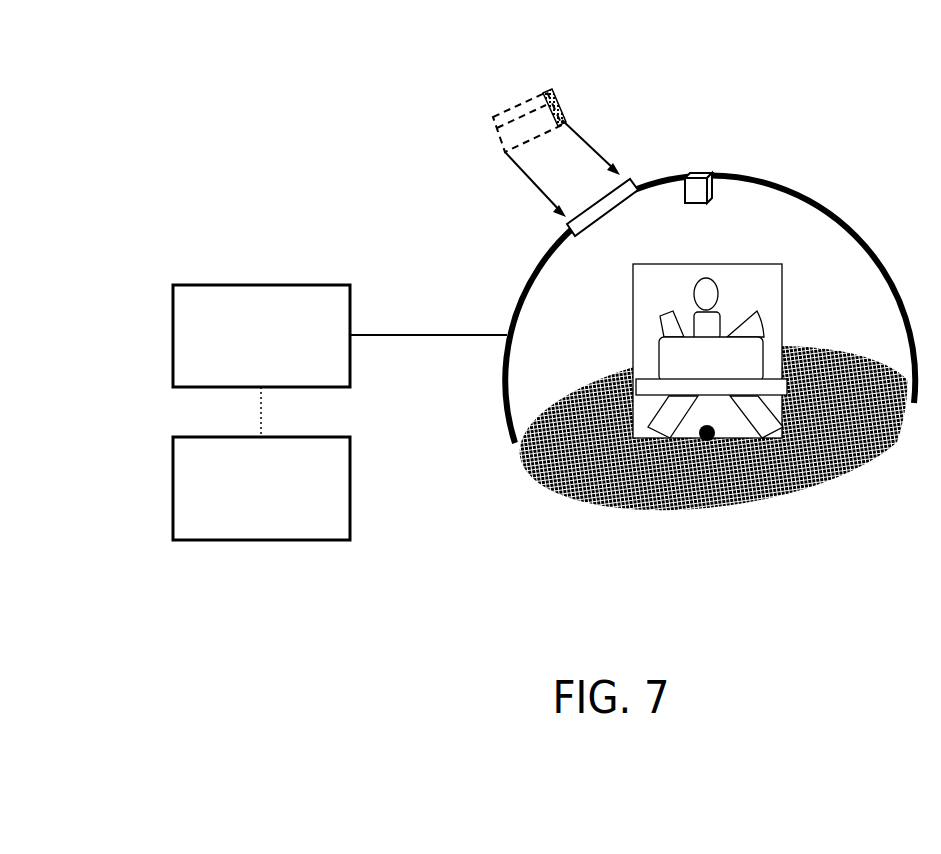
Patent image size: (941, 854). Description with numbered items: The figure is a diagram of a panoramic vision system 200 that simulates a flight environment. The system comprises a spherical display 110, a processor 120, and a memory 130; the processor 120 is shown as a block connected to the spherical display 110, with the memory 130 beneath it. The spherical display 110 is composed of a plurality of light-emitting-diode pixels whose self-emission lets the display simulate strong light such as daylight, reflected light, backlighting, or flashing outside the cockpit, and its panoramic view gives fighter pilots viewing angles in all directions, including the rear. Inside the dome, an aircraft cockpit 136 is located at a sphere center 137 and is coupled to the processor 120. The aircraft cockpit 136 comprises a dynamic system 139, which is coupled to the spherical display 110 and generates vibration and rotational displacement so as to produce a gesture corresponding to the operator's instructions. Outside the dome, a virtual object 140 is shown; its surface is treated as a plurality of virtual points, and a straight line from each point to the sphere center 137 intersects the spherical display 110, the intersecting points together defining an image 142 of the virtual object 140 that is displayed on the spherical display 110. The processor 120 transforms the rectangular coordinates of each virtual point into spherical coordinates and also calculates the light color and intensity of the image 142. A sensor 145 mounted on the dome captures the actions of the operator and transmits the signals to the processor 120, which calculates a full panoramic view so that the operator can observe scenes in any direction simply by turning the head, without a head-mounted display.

The spherical display 110 is at (832, 204).
The processor 120 is at (281, 356).
The memory 130 is at (289, 504).
The aircraft cockpit 136 is at (757, 364).
The sphere center 137 is at (705, 441).
The dynamic system 139 is at (782, 416).
The virtual object 140 is at (546, 92).
The image 142 is at (565, 217).
The sensor 145 is at (709, 171).
The panoramic vision system 200 is at (370, 177).